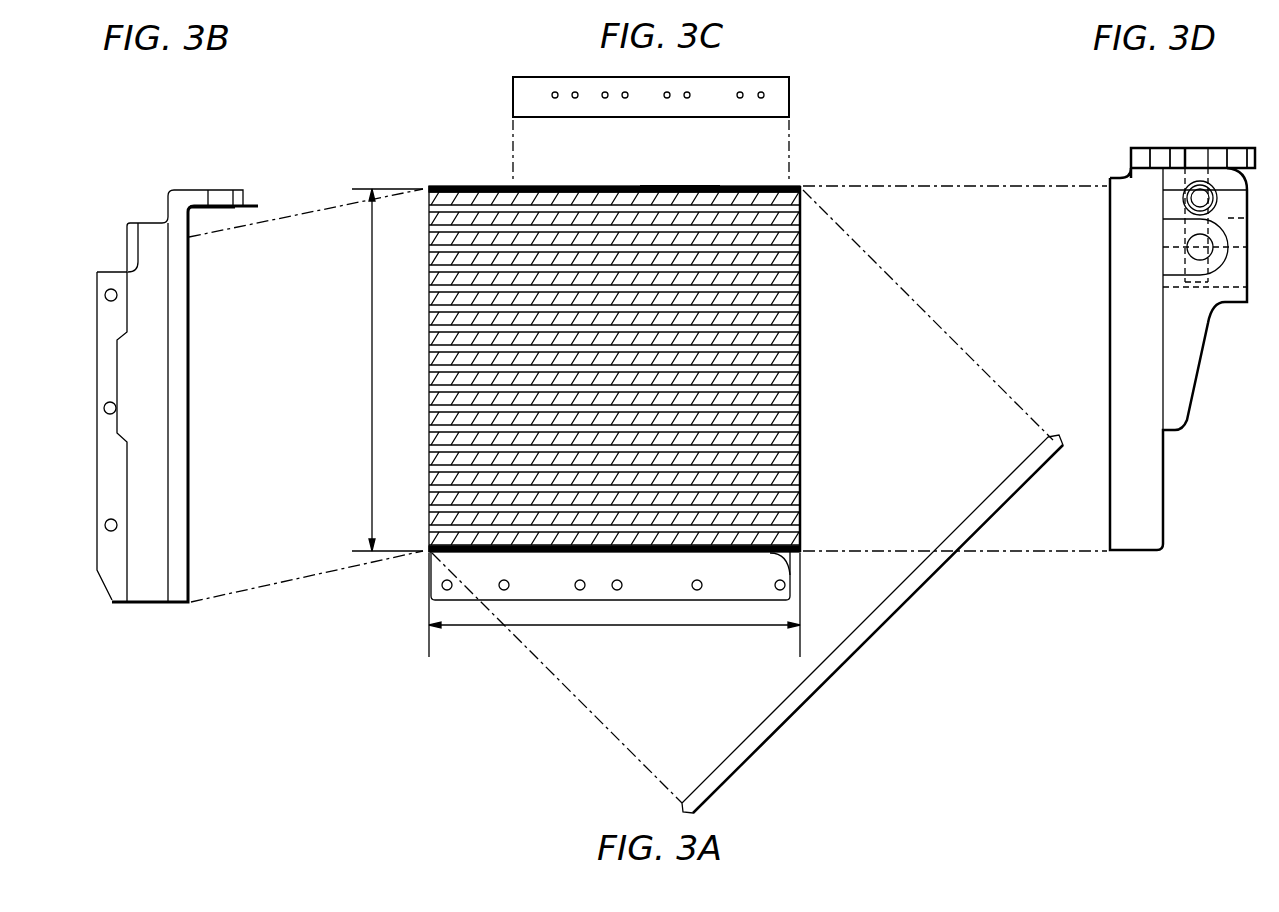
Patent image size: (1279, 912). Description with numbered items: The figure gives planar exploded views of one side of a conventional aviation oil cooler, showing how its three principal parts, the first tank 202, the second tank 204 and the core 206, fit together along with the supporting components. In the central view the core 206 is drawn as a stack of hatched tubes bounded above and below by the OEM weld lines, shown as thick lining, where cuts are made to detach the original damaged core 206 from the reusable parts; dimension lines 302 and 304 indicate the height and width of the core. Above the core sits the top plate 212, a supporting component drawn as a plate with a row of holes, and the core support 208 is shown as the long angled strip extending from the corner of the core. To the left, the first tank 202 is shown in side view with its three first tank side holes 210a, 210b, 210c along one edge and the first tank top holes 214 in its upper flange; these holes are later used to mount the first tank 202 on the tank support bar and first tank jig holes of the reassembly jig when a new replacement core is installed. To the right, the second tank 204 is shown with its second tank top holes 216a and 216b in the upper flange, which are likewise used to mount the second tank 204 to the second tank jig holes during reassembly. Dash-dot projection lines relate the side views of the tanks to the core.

In FIG. 3B, the first tank 202 is at (148, 572).
In FIG. 3D, the second tank 204 is at (1136, 512).
In FIG. 3A, the core 206 is at (428, 338).
In FIG. 3A, the core support 208 is at (790, 716).
In FIG. 3B, the first tank side hole 210a is at (105, 295).
In FIG. 3B, the first tank side hole 210b is at (104, 408).
In FIG. 3B, the first tank side hole 210c is at (105, 525).
In FIG. 3C, the top plate 212 is at (780, 100).
In FIG. 3B, the first tank top holes 214 is at (223, 197).
In FIG. 3D, the second tank top hole 216a is at (1156, 155).
In FIG. 3D, the second tank top hole 216b is at (1232, 155).
In FIG. 3A, the core height dimension 302 is at (372, 370).
In FIG. 3A, the core width dimension 304 is at (603, 627).